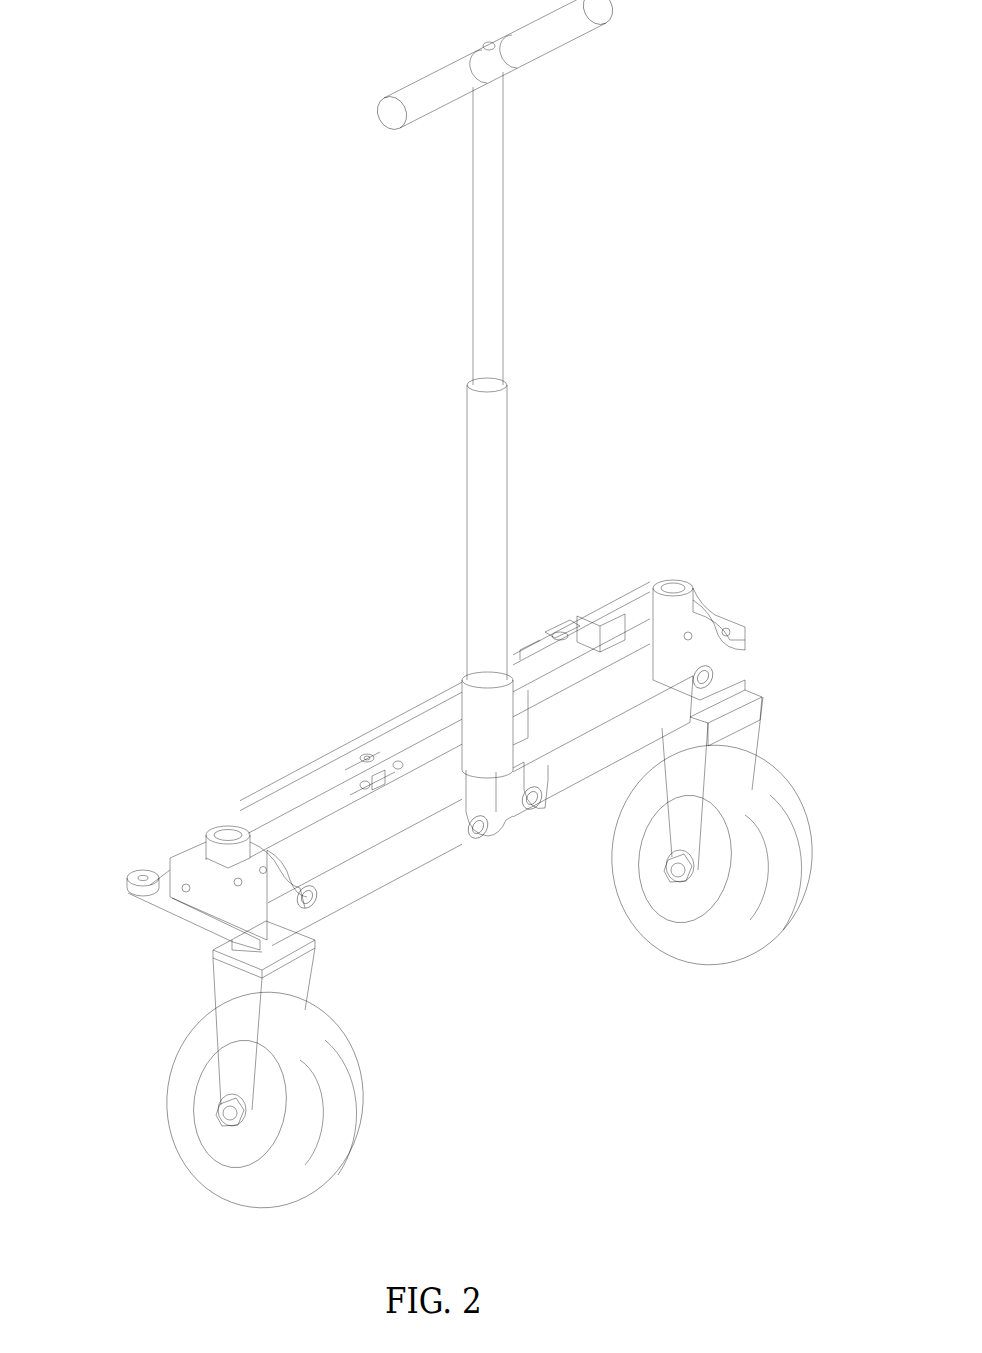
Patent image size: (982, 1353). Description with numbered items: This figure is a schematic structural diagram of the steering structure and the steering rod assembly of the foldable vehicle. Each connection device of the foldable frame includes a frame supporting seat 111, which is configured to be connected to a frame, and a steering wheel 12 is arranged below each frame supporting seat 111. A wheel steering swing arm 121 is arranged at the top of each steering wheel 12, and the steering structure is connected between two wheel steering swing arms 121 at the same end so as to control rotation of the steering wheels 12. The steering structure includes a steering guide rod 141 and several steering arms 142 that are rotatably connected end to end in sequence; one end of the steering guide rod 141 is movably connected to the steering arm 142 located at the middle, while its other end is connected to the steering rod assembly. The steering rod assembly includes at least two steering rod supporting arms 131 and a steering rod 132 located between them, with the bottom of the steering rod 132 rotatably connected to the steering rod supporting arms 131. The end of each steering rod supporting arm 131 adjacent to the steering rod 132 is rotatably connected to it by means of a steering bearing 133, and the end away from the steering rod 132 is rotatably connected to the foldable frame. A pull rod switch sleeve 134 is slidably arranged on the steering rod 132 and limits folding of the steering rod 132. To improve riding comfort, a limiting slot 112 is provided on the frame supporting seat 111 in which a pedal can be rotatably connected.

The steering wheel 12 is at (340, 1138).
The frame supporting seat 111 is at (217, 892).
The limiting slot 112 is at (295, 893).
The wheel steering swing arm 121 is at (163, 917).
The steering rod supporting arm 131 is at (602, 738).
The steering rod 132 is at (507, 427).
The steering bearing 133 is at (498, 797).
The pull rod switch sleeve 134 is at (470, 730).
The steering guide rod 141 is at (398, 760).
The steering arm 142 is at (298, 790).